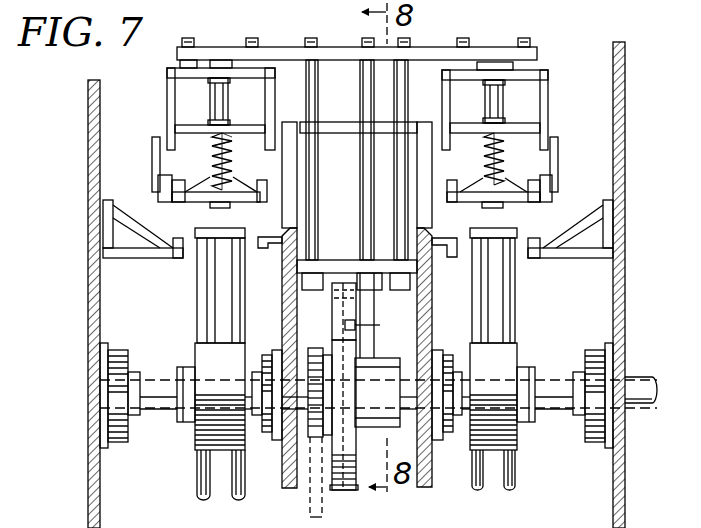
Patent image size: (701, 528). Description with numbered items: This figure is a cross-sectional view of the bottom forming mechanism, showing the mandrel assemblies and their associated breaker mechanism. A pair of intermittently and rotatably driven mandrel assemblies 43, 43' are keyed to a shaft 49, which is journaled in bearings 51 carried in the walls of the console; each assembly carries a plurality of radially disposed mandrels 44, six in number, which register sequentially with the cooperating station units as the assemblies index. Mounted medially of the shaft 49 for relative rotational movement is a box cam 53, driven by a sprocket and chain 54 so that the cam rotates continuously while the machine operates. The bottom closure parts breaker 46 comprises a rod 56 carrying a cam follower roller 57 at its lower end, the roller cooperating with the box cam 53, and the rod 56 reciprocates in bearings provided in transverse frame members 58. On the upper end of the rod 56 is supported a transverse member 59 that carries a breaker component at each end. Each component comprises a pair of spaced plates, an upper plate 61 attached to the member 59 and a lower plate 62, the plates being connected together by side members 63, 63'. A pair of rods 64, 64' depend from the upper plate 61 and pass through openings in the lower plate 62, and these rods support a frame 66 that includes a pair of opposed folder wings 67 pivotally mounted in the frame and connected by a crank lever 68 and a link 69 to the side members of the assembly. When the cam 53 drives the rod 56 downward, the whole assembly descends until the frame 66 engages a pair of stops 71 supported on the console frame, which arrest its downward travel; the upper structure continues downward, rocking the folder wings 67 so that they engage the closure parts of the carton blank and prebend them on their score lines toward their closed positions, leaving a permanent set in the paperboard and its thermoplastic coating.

The transverse member 59 is at (283, 52).
The transverse frame members 58 is at (331, 130).
The rod 56 is at (360, 178).
The cam follower roller 57 is at (337, 338).
The box cam 53 is at (340, 491).
The sprocket and chain 54 is at (309, 503).
The bearings 51 is at (118, 351).
The shaft 49 is at (632, 378).
The mandrel assembly 43 is at (205, 364).
The mandrel assembly 43' is at (500, 359).
The mandrels 44 is at (194, 300).
The stops 71 is at (178, 240).
The side members 63 is at (210, 105).
The side members 63' is at (517, 106).
The upper plate 61 is at (205, 78).
The lower plate 62 is at (196, 112).
The rods 64 is at (231, 101).
The rods 64' is at (478, 101).
The frame 66 is at (262, 166).
The folder wings 67 is at (206, 186).
The crank lever 68 is at (158, 190).
The link 69 is at (152, 152).
The bottom closure parts breaker 46 is at (518, 131).